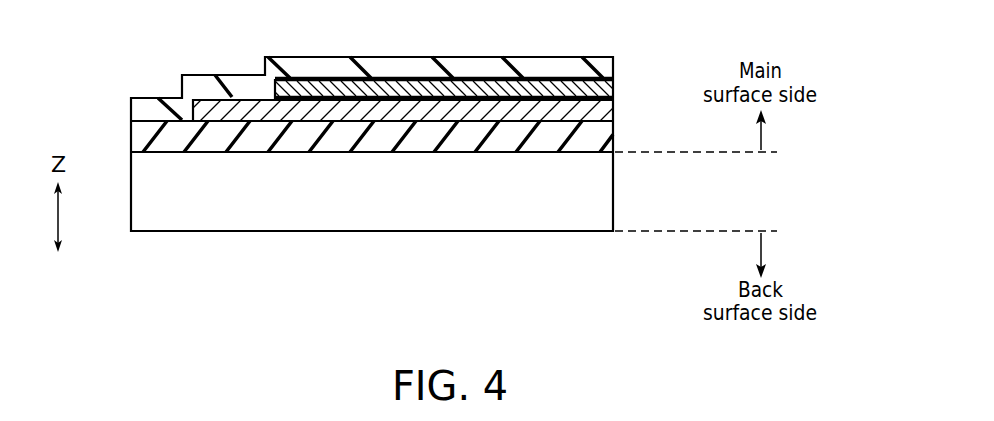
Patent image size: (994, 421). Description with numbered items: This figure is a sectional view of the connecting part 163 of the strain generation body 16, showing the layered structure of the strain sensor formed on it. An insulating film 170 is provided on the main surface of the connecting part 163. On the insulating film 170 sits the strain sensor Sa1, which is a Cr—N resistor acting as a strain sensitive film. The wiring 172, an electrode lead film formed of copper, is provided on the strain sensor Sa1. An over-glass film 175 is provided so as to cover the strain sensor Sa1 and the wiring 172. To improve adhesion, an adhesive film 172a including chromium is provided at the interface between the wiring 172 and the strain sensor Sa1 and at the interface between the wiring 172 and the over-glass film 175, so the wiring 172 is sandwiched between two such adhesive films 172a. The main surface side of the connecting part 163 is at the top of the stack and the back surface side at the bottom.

The strain generation body 16 is at (586, 272).
The connecting part 163 is at (602, 194).
The insulating film 170 is at (598, 139).
The strain sensor Sa1 is at (607, 110).
The adhesive film 172a is at (613, 80).
The wiring 172 is at (600, 90).
The over-glass (OG) film 175 is at (232, 78).